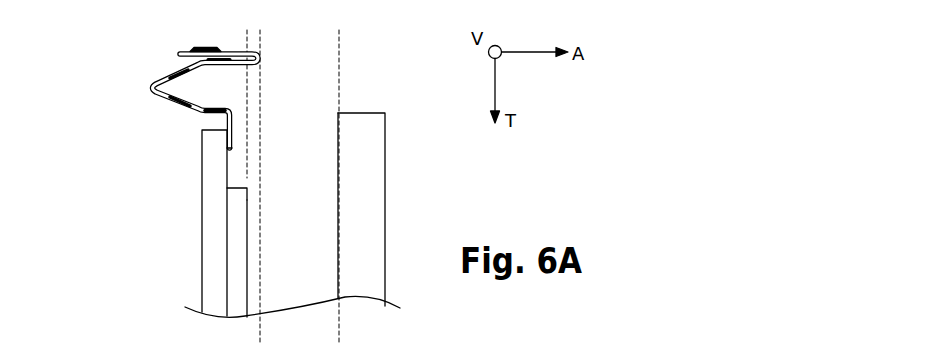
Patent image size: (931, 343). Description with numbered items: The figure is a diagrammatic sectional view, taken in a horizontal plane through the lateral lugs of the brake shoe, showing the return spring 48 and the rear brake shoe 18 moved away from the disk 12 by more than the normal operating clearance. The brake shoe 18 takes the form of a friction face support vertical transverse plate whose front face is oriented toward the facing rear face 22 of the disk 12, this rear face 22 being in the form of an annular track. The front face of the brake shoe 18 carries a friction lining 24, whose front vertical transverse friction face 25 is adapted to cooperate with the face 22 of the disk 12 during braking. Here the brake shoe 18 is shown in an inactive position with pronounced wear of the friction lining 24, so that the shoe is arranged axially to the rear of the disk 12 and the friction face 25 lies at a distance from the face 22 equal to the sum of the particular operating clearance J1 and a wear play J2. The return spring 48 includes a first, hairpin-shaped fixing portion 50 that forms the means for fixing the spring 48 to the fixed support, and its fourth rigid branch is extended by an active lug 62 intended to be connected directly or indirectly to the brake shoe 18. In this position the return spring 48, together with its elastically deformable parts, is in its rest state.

The disk 12 is at (365, 202).
The rear brake shoe 18 is at (215, 275).
The rear face of the disk 22 is at (336, 214).
The friction lining 24 is at (239, 308).
The front vertical transverse friction face 25 is at (247, 283).
The return spring 48 is at (130, 96).
The fixing portion 50 is at (215, 42).
The active lug 62 is at (232, 149).
The operating clearance J1 is at (218, 37).
The wear play J2 is at (340, 37).